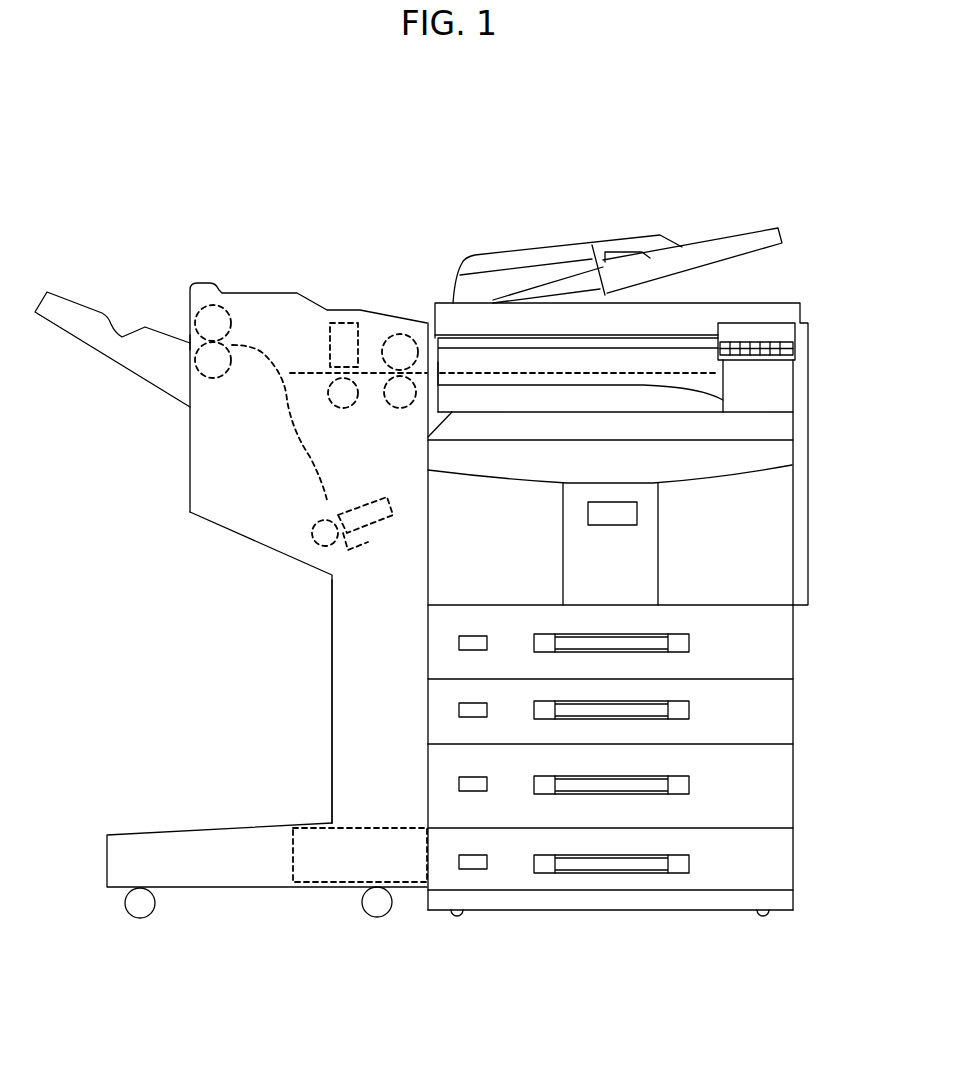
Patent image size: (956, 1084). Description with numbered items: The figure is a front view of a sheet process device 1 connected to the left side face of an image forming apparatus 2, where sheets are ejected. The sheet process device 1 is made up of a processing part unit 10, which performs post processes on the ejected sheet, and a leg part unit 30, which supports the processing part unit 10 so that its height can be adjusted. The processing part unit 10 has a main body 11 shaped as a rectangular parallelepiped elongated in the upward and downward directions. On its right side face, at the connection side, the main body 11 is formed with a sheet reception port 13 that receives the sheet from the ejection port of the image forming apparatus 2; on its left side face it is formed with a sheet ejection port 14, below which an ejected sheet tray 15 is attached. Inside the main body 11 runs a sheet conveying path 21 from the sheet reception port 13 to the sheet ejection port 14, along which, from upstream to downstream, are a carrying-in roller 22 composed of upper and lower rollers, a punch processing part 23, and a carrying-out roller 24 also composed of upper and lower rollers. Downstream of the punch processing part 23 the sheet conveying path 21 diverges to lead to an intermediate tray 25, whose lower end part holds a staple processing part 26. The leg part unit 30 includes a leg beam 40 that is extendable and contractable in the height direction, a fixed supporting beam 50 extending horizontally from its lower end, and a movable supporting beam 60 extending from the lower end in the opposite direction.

The sheet process device 1 is at (308, 226).
The image forming apparatus 2 is at (567, 223).
The processing part unit 10 is at (134, 244).
The main body 11 is at (188, 478).
The sheet reception port 13 is at (443, 372).
The sheet ejection port 14 is at (190, 342).
The ejected sheet tray 15 is at (123, 338).
The sheet conveying path 21 is at (298, 372).
The carrying-in roller 22 is at (397, 333).
The punch processing part 23 is at (343, 325).
The carrying-out roller 24 is at (213, 305).
The intermediate tray 25 is at (313, 468).
The staple processing part 26 is at (337, 507).
The leg part unit 30 is at (232, 675).
The leg beam 40 is at (338, 710).
The fixed supporting beam 50 is at (253, 852).
The movable supporting beam 60 is at (333, 843).